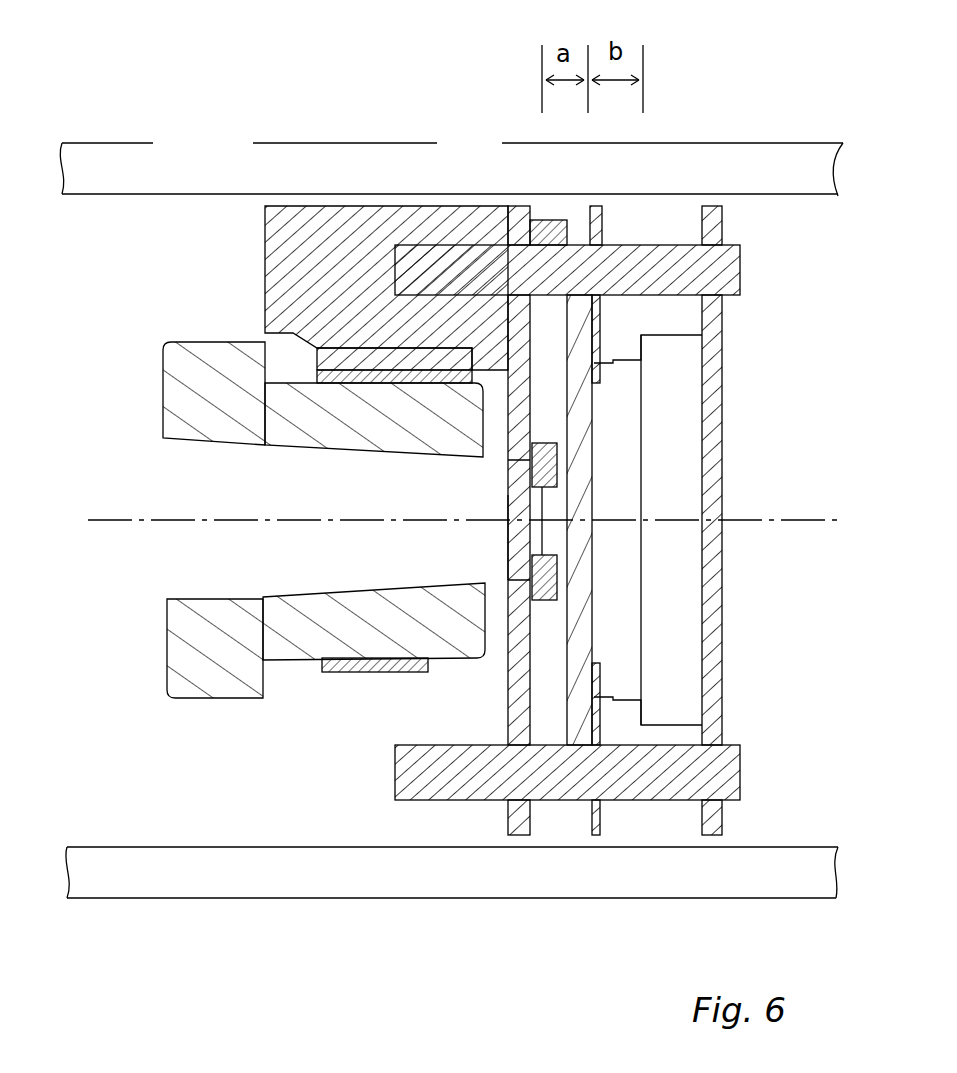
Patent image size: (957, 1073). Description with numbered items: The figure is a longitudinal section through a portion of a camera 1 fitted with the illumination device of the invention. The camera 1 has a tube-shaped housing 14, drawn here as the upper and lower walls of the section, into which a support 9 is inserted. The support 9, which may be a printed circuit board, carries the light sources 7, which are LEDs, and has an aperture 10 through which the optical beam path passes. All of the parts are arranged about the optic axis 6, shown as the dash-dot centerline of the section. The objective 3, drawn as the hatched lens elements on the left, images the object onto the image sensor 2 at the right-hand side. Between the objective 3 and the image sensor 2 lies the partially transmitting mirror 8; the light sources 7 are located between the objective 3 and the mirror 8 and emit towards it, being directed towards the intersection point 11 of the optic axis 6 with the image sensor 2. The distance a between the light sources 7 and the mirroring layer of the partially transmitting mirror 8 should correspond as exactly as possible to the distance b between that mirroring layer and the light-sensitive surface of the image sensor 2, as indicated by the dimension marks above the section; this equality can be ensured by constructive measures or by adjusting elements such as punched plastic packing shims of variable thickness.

The camera 1 is at (387, 94).
The image sensor 2 is at (663, 703).
The objective 3 is at (238, 675).
The optic axis 6 is at (96, 518).
The light sources 7 is at (553, 455).
The partially transmitting mirror 8 is at (587, 702).
The support 9 is at (513, 838).
The aperture 10 is at (508, 537).
The intersection point 11 is at (702, 520).
The tube-shaped housing 14 is at (138, 167).